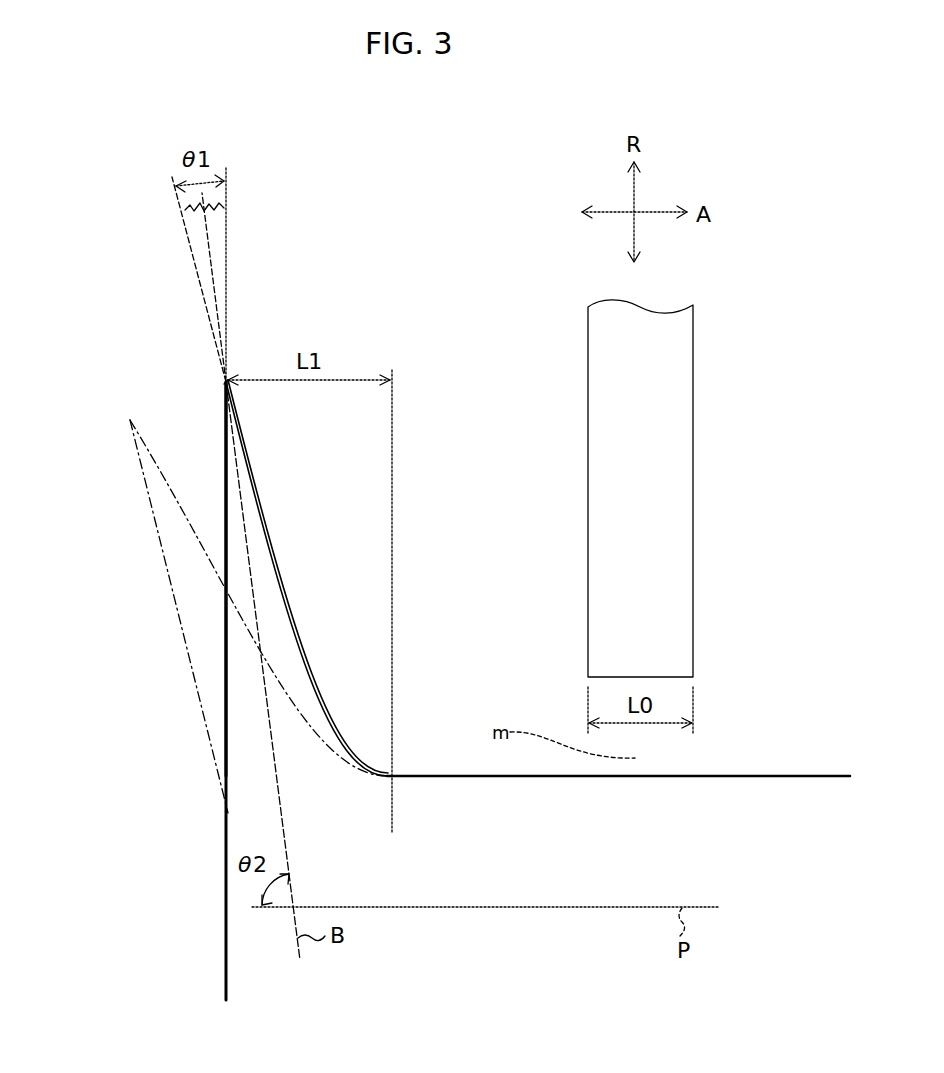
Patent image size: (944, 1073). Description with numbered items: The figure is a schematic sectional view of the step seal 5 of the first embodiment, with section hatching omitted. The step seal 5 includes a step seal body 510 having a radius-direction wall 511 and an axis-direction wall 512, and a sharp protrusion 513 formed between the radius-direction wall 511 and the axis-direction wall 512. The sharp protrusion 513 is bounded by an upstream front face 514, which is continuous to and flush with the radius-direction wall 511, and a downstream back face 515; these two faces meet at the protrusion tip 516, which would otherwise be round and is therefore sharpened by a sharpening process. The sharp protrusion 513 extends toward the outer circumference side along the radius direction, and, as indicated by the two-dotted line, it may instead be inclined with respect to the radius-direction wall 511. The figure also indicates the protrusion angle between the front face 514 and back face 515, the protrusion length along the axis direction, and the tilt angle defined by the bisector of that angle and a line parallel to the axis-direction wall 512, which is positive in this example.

The step seal 5 is at (786, 448).
The step seal body 510 is at (501, 691).
The radius-direction wall 511 is at (224, 880).
The axis-direction wall 512 is at (818, 773).
The sharp protrusion 513 is at (270, 463).
The front face 514 is at (225, 453).
The back face 515 is at (265, 520).
The protrusion tip 516 is at (224, 378).